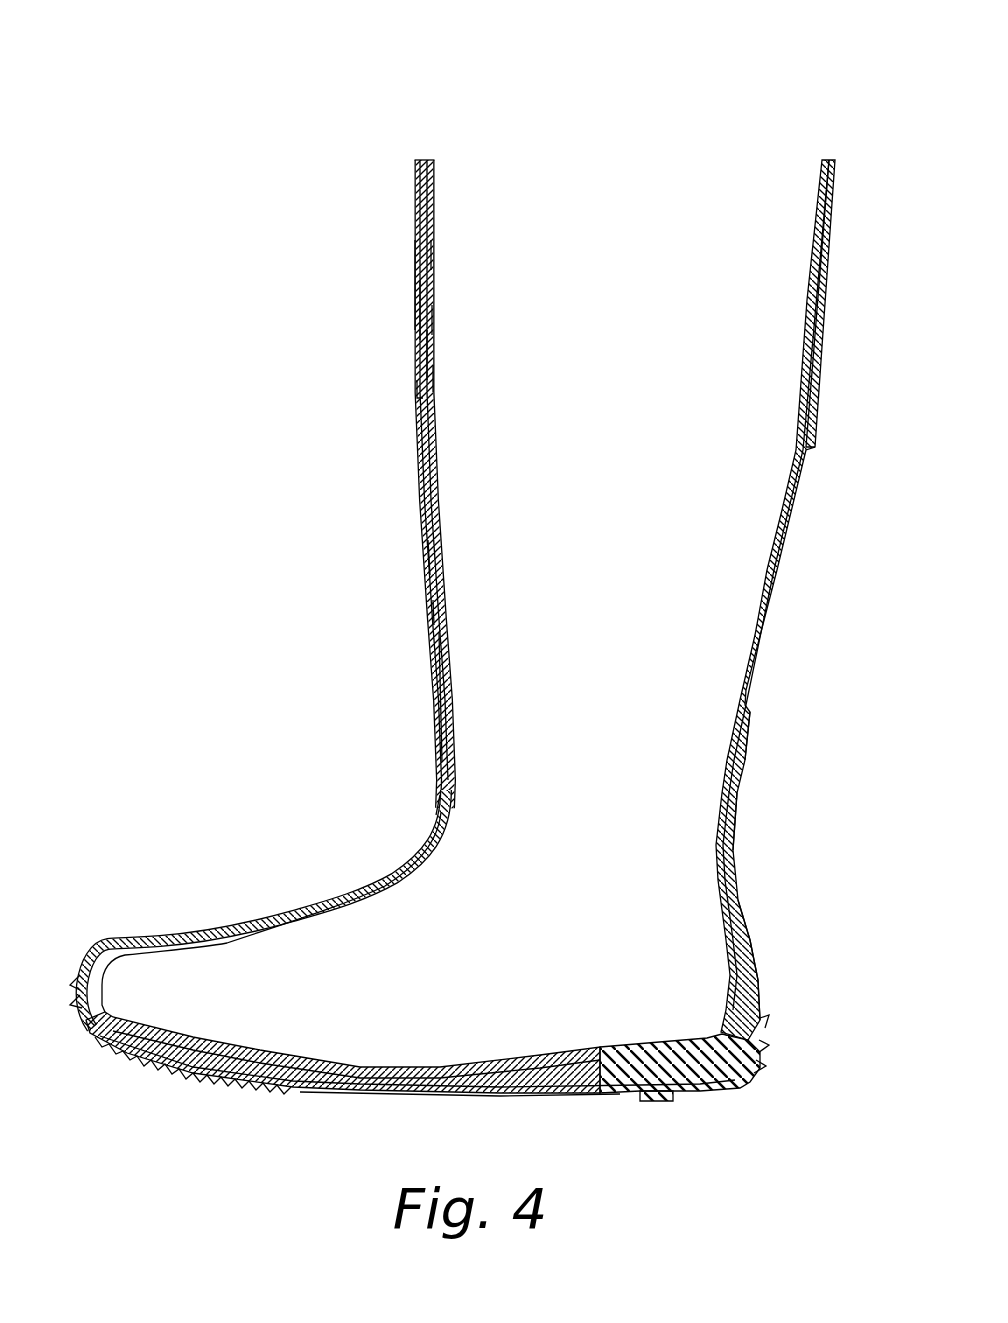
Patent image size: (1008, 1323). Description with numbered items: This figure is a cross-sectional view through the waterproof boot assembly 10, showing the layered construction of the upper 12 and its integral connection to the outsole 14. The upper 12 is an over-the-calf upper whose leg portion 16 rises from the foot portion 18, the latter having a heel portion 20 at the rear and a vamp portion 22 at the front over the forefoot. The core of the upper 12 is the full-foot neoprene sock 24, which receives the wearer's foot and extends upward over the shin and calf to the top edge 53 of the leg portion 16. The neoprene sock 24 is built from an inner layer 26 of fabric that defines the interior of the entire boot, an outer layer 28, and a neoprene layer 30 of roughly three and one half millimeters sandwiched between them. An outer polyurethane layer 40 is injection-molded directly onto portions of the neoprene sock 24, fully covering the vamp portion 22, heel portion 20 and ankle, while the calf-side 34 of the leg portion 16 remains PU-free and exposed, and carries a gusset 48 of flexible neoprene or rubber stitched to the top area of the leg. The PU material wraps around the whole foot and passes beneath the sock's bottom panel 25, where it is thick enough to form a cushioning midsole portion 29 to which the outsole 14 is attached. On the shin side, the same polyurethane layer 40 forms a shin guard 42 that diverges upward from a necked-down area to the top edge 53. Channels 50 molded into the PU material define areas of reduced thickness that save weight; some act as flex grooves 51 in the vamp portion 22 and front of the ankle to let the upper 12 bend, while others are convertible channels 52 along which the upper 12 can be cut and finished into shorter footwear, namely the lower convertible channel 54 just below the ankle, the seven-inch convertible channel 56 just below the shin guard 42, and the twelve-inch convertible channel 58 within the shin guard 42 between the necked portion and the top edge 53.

The waterproof boot assembly 10 is at (287, 88).
The upper 12 is at (410, 222).
The outsole 14 is at (215, 1085).
The leg portion 16 is at (420, 283).
The foot portion 18 is at (288, 1082).
The heel portion 20 is at (742, 950).
The vamp portion 22 is at (315, 918).
The neoprene sock 24 is at (432, 255).
The bottom panel 25 is at (575, 1048).
The inner layer 26 is at (434, 322).
The outer layer 28 is at (425, 358).
The midsole portion 29 is at (612, 1075).
The neoprene layer 30 is at (433, 378).
The calf-side 34 is at (785, 473).
The outer polyurethane layer 40 is at (430, 558).
The shin guard 42 is at (423, 318).
The gusset 48 is at (825, 218).
The channels 50 is at (432, 812).
The flex grooves 51 is at (430, 850).
The convertible channels 52 is at (437, 765).
The top edge 53 is at (747, 703).
The lower convertible channel 54 is at (730, 835).
The 7-inch convertible channel 56 is at (433, 612).
The 12-inch convertible channel 58 is at (420, 397).